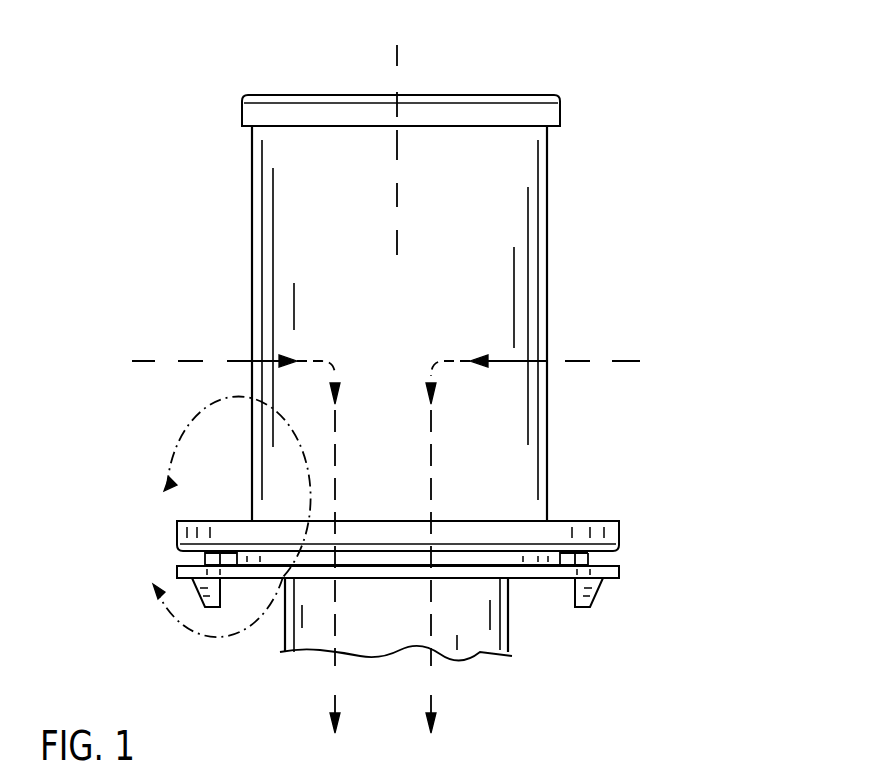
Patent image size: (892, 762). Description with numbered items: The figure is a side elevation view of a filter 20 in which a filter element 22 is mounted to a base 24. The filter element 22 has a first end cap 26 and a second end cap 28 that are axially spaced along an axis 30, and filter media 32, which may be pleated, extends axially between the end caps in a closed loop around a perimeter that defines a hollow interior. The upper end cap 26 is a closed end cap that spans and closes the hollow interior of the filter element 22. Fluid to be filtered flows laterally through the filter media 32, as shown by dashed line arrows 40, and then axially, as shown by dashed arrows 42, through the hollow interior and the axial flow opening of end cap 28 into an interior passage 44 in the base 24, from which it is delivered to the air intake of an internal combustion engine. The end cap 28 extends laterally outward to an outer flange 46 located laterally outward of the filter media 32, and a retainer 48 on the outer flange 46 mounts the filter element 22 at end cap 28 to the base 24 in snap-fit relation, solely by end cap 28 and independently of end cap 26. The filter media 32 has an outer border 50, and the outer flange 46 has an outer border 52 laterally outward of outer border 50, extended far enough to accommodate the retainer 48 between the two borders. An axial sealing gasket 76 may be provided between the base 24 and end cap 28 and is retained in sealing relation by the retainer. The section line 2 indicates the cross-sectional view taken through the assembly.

The filter 20 is at (192, 262).
The filter element 22 is at (290, 213).
The base 24 is at (508, 632).
The first end cap 26 is at (547, 117).
The second end cap 28 is at (565, 521).
The axis 30 is at (400, 62).
The filter media 32 is at (553, 761).
The dashed line arrows 40 is at (190, 363).
The dashed arrows 42 is at (431, 666).
The interior passage 44 is at (457, 656).
The outer flange 46 is at (620, 537).
The retainer 48 is at (588, 607).
The outer border 50 is at (252, 148).
The outer border 52 is at (175, 532).
The axial sealing gasket 76 is at (595, 558).
The section line 2- 2 is at (226, 517).